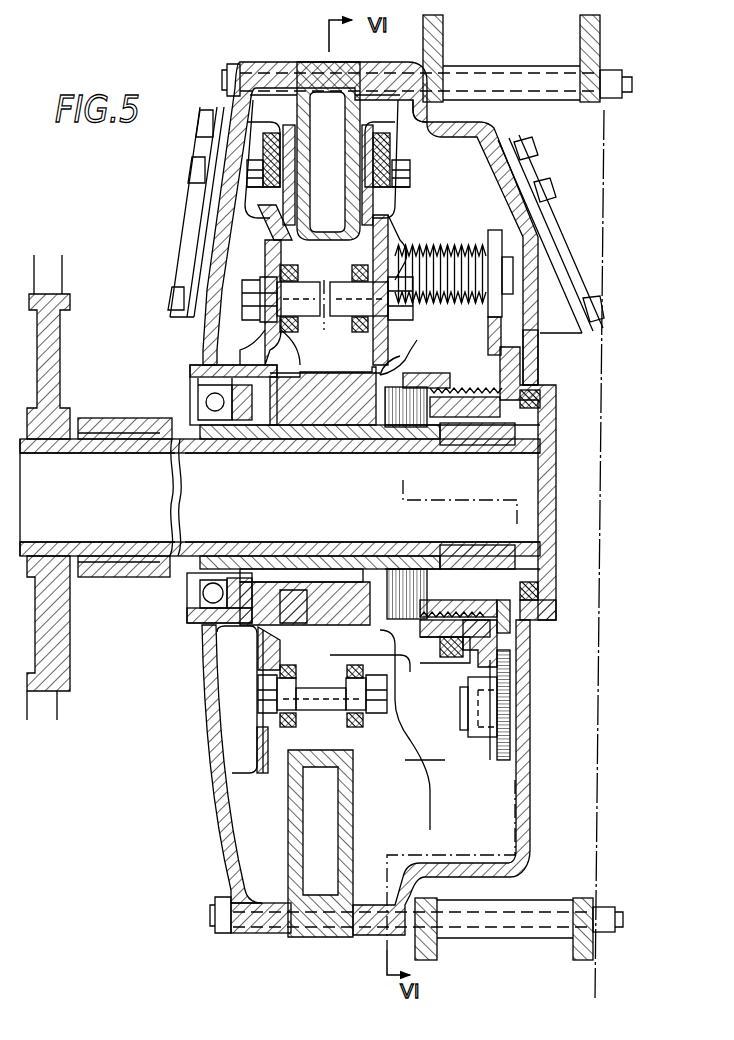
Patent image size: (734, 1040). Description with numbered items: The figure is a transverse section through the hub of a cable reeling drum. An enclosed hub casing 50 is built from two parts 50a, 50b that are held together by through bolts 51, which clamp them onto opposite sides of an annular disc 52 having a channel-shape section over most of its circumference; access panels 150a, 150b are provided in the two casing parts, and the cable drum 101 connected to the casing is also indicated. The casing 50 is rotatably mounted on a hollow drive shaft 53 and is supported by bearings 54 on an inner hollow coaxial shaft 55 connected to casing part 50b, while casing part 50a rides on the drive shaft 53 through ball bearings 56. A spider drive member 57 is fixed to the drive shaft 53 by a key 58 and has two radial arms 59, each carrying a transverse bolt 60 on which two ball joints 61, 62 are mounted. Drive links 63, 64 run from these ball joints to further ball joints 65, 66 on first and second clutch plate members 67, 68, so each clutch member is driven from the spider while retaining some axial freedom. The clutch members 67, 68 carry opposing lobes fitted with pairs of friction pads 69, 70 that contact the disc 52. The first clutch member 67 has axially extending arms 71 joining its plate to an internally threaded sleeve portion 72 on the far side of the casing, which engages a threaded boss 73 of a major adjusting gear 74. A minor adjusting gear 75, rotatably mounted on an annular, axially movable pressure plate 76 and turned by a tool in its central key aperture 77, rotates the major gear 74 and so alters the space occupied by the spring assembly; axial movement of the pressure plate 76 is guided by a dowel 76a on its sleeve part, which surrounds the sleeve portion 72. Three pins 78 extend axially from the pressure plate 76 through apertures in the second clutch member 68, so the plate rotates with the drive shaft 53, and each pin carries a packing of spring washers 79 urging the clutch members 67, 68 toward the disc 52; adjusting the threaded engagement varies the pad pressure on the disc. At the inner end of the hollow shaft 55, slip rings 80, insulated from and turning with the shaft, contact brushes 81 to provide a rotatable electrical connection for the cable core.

The hub casing 50 is at (437, 118).
The casing part 50a is at (213, 750).
The casing part 50b is at (532, 365).
The through bolts 51 is at (226, 80).
The annular disc 52 is at (310, 112).
The hollow drive shaft 53 is at (340, 433).
The bearings 54 is at (441, 444).
The inner hollow coaxial shaft 55 is at (75, 443).
The ball bearings 56 is at (206, 404).
The spider drive member 57 is at (297, 412).
The key 58 is at (290, 575).
The radial arms 59 is at (307, 652).
The transverse bolt 60 is at (333, 703).
The ball joint 61 is at (282, 697).
The ball joint 62 is at (362, 700).
The drive link 63 is at (282, 268).
The drive link 64 is at (356, 270).
The ball joint 65 is at (290, 302).
The ball joint 66 is at (365, 303).
The first clutch plate member 67 is at (238, 236).
The second clutch plate member 68 is at (403, 198).
The friction pads 69 is at (288, 125).
The friction pads 70 is at (365, 130).
The axially extending arms 71 is at (402, 367).
The sleeve portion 72 is at (456, 380).
The threaded boss 73 is at (463, 402).
The major adjusting gear 74 is at (512, 395).
The minor adjusting gear 75 is at (500, 727).
The pressure plate 76 is at (497, 331).
The dowel 76a is at (420, 655).
The central key aperture 77 is at (500, 700).
The pins 78 is at (512, 260).
The spring washers 79 is at (427, 247).
The slip rings 80 is at (52, 383).
The brushes 81 is at (53, 278).
The cable drum 101 is at (590, 80).
The access panel 150a is at (190, 208).
The access panel 150b is at (550, 214).